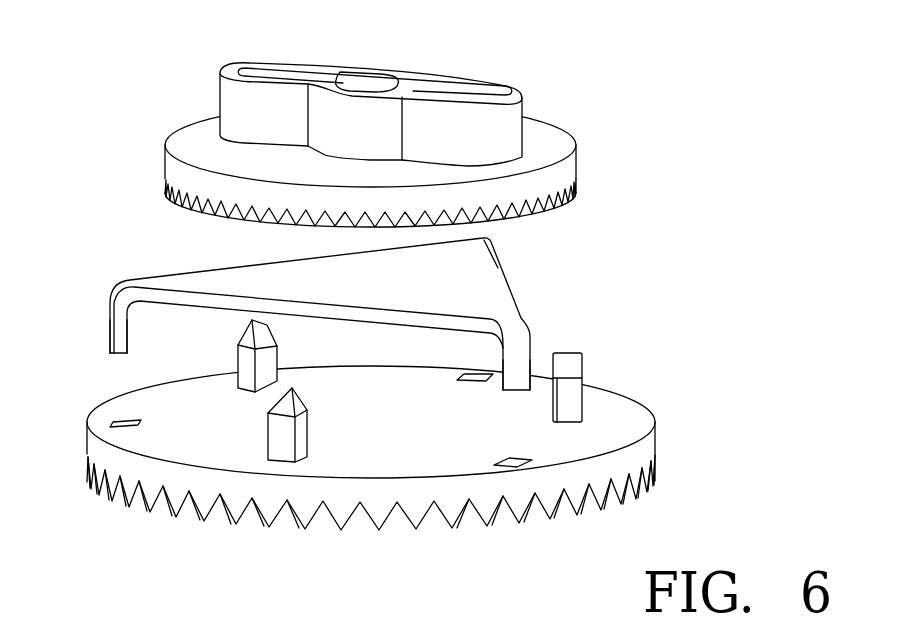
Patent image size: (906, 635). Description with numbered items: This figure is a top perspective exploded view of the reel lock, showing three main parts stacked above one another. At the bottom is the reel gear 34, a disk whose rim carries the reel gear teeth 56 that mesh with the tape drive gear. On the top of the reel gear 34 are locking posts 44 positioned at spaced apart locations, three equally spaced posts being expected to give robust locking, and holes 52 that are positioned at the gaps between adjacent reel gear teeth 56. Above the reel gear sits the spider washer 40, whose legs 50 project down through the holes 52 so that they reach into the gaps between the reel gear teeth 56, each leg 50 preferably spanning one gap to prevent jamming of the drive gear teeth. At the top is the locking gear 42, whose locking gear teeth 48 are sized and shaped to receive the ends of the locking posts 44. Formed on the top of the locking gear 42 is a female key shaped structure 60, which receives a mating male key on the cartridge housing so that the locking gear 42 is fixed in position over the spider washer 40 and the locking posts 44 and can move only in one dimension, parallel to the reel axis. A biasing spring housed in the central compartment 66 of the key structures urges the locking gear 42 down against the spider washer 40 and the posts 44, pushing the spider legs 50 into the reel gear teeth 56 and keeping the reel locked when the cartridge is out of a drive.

The reel gear 34 is at (632, 417).
The spider washer 40 is at (493, 283).
The locking gear 42 is at (574, 167).
The locking posts 44 is at (582, 368).
The locking gear teeth 48 is at (205, 206).
The legs 50 is at (110, 347).
The holes 52 is at (126, 426).
The reel gear teeth 56 is at (117, 492).
The female key shaped structure 60 is at (523, 98).
The central compartment 66 is at (367, 84).